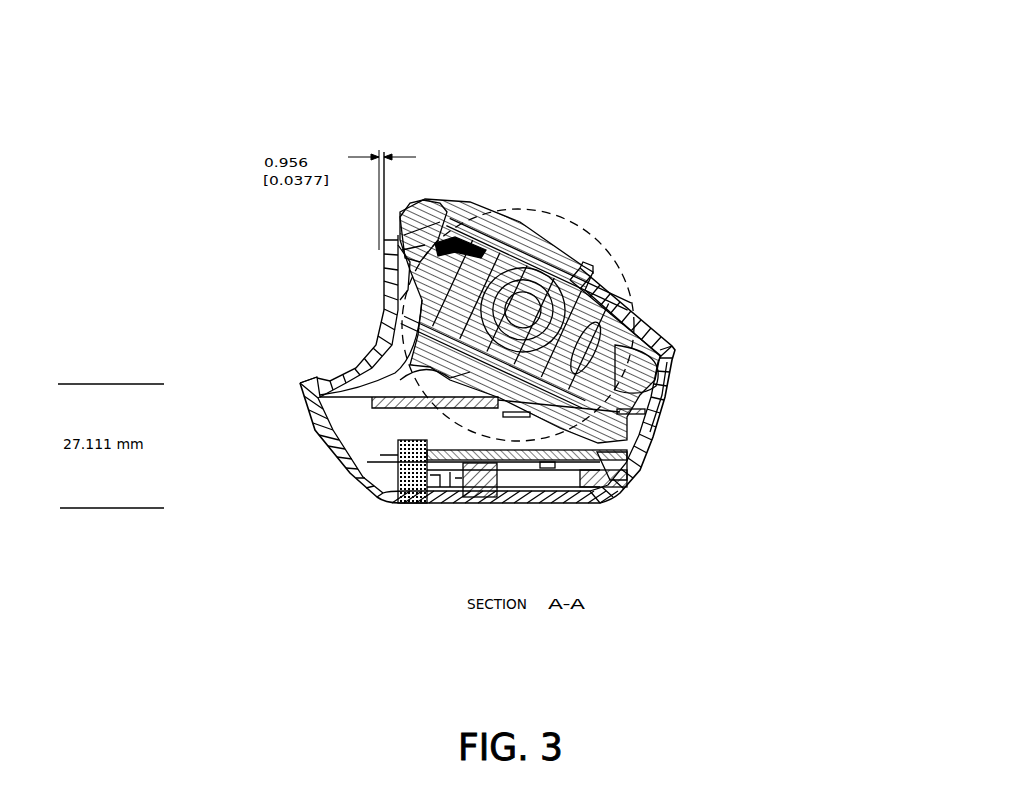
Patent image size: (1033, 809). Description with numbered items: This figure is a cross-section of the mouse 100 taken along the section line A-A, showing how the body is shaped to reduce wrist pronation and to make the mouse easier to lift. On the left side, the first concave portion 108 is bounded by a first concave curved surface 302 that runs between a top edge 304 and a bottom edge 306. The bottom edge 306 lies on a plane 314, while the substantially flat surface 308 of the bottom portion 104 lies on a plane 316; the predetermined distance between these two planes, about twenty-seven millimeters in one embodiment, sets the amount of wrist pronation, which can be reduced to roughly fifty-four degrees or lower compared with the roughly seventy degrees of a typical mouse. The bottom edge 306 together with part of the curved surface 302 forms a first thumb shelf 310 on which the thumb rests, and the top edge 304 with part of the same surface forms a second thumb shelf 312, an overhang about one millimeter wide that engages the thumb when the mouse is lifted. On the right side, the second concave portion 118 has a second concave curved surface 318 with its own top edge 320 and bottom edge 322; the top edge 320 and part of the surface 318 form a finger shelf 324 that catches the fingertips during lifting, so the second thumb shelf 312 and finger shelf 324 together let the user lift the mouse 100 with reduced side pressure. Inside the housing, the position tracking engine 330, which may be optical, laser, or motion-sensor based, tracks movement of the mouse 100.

The mouse 100 is at (776, 50).
The bottom portion 104 is at (563, 505).
The first concave portion 108 is at (337, 322).
The second concave portion 118 is at (798, 390).
The first concave curved surface 302 is at (380, 307).
The top edge 304 is at (383, 247).
The bottom edge 306 is at (317, 380).
The substantially flat surface 308 is at (470, 527).
The first thumb shelf 310 is at (326, 357).
The second thumb shelf 312 is at (374, 267).
The plane 314 is at (88, 384).
The plane 316 is at (90, 508).
The second concave curved surface 318 is at (645, 407).
The top edge 320 is at (673, 350).
The bottom edge 322 is at (648, 448).
The finger shelf 324 is at (681, 380).
The position tracking engine 330 is at (573, 225).